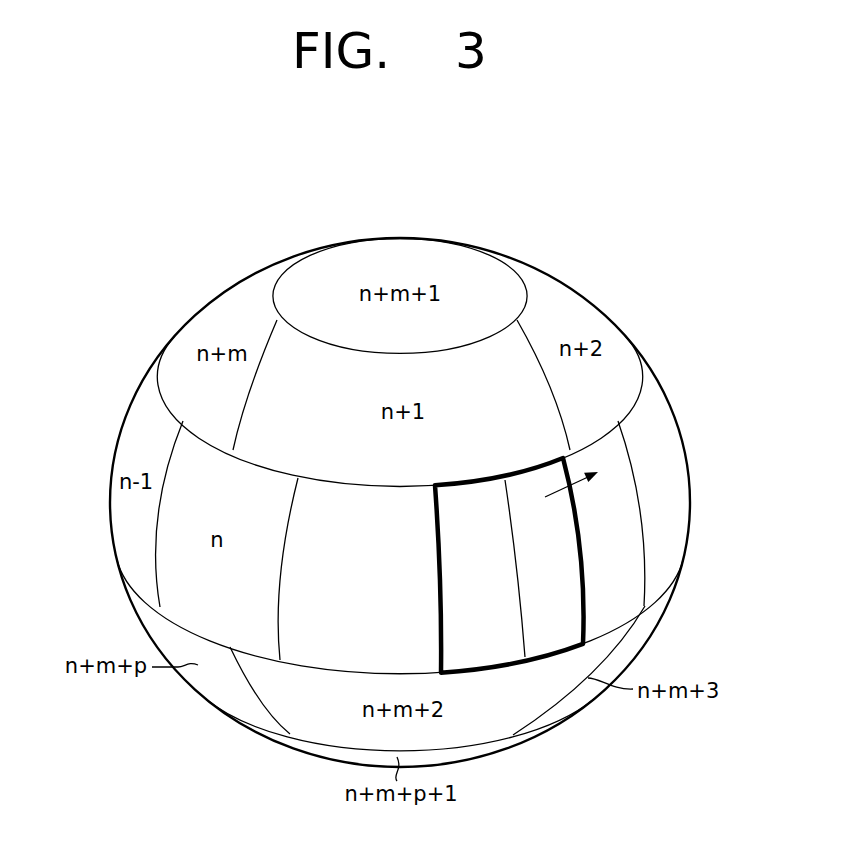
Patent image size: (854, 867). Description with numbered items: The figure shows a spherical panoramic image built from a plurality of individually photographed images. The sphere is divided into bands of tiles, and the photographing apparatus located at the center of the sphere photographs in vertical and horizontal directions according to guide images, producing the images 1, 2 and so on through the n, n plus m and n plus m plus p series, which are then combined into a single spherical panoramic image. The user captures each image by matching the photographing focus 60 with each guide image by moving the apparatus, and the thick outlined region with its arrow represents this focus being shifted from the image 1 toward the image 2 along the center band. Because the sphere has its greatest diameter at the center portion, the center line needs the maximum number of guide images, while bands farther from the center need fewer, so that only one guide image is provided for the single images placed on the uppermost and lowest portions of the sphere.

The photographing focus 60 is at (584, 603).
The image 1 is at (342, 569).
The image 2 is at (616, 513).